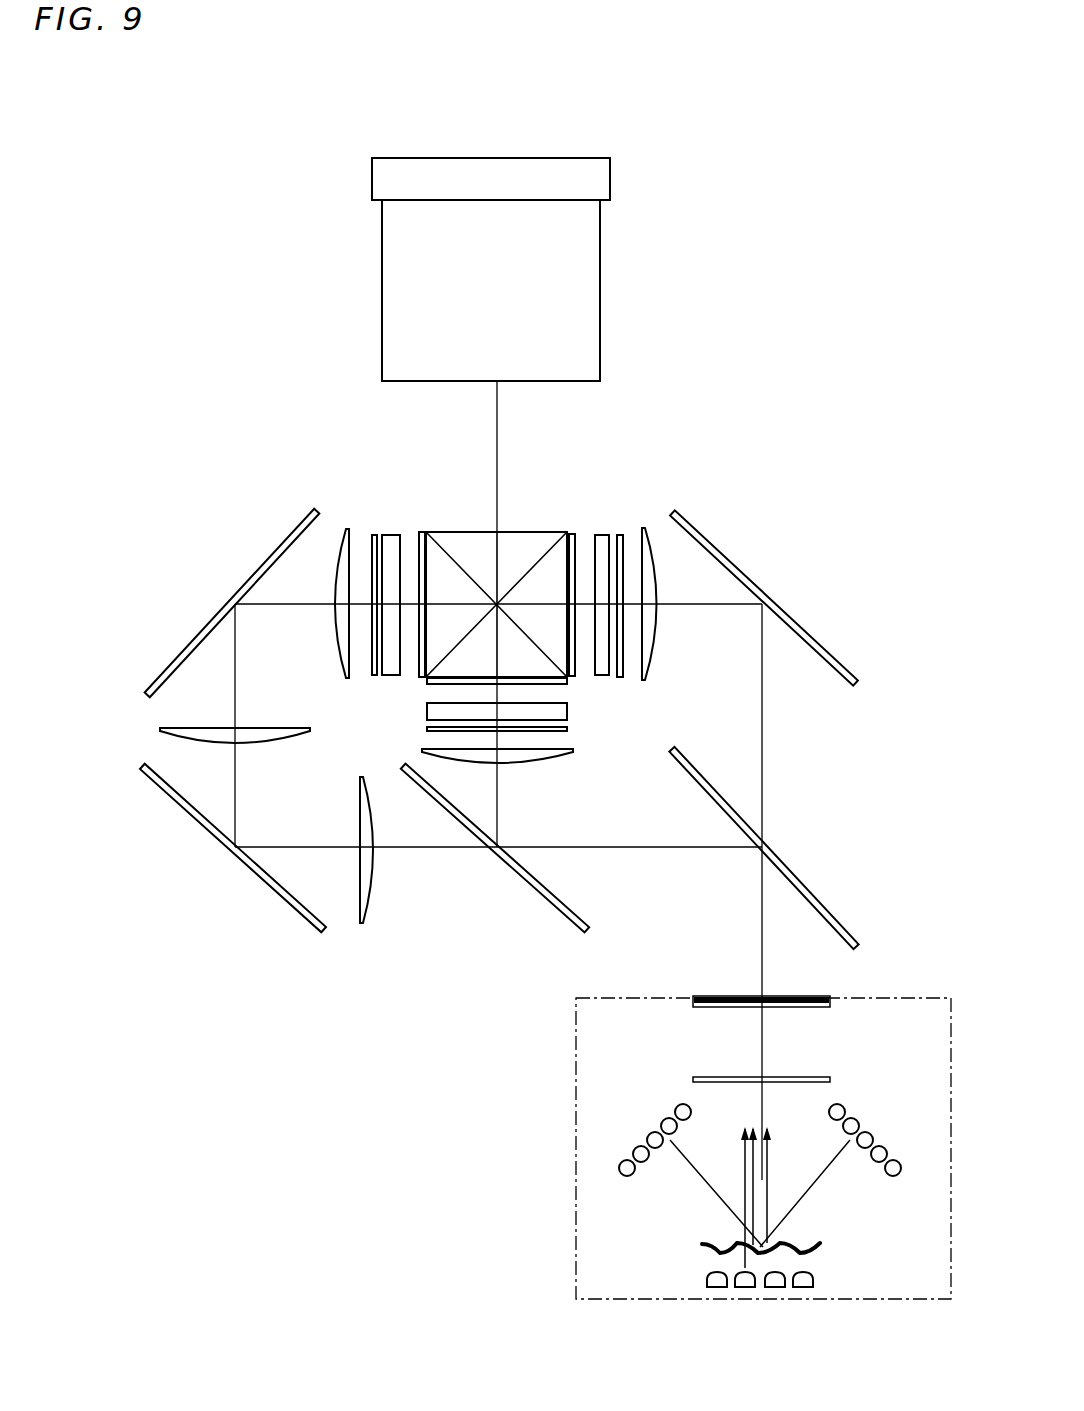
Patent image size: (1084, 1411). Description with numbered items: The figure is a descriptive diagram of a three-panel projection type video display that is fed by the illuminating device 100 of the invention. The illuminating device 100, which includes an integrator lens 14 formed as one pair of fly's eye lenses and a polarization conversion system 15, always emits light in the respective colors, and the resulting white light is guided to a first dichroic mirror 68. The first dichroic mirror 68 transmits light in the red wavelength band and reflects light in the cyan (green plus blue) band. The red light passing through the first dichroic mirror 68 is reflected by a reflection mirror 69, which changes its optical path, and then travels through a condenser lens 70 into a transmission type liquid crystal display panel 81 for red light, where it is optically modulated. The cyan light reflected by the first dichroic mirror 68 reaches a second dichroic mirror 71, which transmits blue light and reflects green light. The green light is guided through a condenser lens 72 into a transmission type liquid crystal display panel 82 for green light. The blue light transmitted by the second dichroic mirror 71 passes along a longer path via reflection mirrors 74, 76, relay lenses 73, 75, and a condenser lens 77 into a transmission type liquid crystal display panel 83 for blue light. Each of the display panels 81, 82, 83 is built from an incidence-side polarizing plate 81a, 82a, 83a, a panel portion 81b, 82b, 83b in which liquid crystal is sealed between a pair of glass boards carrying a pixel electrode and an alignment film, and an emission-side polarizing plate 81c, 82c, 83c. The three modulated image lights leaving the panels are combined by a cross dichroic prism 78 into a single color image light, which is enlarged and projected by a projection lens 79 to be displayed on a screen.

The projection lens 79 is at (581, 258).
The cross dichroic prism 78 is at (461, 545).
The condenser lens 77 is at (348, 528).
The reflection mirror 76 is at (170, 656).
The relay lens 75 is at (271, 723).
The reflection mirror 74 is at (177, 805).
The relay lens 73 is at (370, 902).
The condenser lens 72 is at (575, 752).
The second dichroic mirror 71 is at (562, 902).
The condenser lens 70 is at (643, 528).
The reflection mirror 69 is at (806, 635).
The first dichroic mirror 68 is at (812, 897).
The transmission type liquid crystal display panel for blue light 83 is at (390, 545).
The incidence-side polarizing plate 83a is at (372, 533).
The panel portion 83b is at (390, 535).
The emission-side polarizing plate 83c is at (432, 564).
The transmission type liquid crystal display panel for red light 81 is at (600, 545).
The incidence-side polarizing plate 81a is at (637, 564).
The panel portion 81b is at (603, 535).
The emission-side polarizing plate 81c is at (572, 532).
The transmission type liquid crystal display panel for green light 82 is at (560, 714).
The incidence-side polarizing plate 82a is at (535, 738).
The panel portion 82b is at (563, 710).
The emission-side polarizing plate 82c is at (568, 681).
The polarization conversion system 15 is at (708, 996).
The integrator lens 14 is at (784, 1006).
The illuminating device 100 is at (587, 1065).